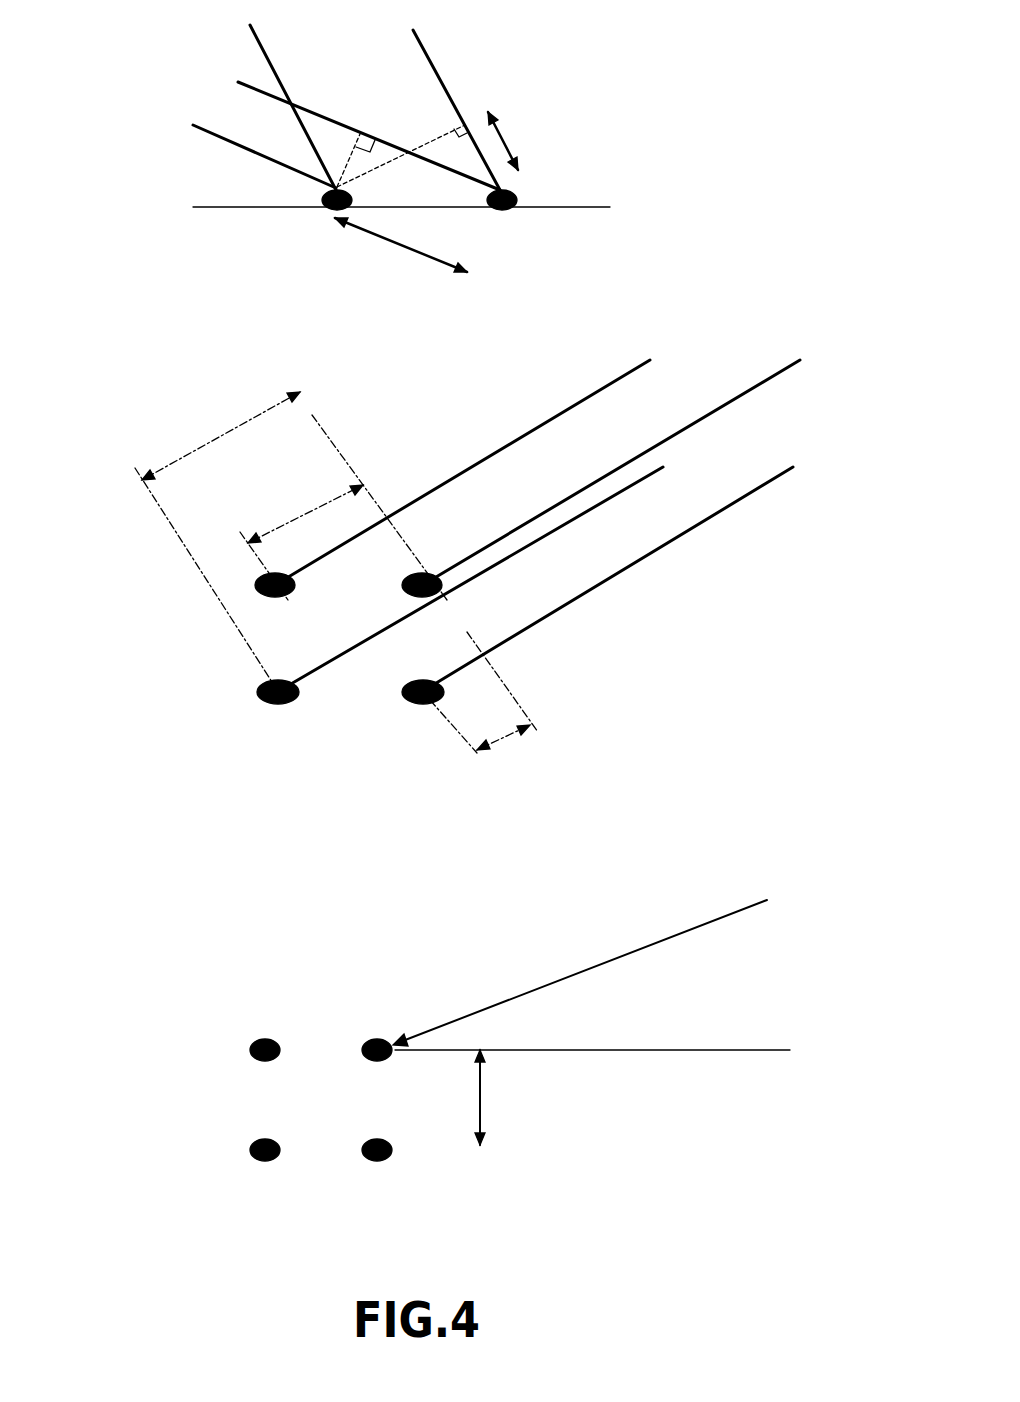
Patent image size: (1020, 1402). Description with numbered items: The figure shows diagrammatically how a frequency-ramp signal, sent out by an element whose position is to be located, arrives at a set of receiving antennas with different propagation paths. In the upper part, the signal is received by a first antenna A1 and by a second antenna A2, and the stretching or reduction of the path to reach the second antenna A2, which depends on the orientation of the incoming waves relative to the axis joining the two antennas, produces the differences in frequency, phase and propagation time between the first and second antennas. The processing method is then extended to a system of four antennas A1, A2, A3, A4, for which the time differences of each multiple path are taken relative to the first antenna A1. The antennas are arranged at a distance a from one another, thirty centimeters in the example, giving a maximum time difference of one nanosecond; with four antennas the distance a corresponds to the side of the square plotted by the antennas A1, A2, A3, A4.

The first antenna A1 is at (372, 647).
The second antenna A2 is at (440, 700).
The third antenna A3 is at (274, 945).
The fourth antenna A4 is at (271, 839).
The distance between the antennas a is at (483, 1100).